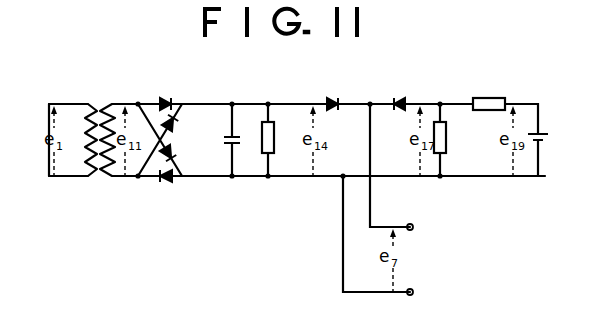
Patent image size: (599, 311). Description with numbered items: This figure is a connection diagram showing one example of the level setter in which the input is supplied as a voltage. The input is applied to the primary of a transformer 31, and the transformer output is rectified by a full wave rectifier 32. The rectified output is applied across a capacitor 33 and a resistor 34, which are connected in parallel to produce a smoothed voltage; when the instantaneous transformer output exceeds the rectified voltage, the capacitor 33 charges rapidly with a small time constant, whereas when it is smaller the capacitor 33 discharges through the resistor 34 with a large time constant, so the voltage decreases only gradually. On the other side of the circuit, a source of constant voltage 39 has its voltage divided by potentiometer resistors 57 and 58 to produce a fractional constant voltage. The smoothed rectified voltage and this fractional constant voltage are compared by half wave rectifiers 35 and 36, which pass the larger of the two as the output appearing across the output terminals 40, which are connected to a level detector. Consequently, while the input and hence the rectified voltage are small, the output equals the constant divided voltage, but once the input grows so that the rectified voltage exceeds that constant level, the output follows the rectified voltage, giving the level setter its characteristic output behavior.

The transformer 31 is at (99, 101).
The full wave rectifier 32 is at (166, 98).
The capacitor 33 is at (226, 140).
The resistor 34 is at (261, 139).
The half wave rectifier 35 is at (334, 99).
The half wave rectifier 36 is at (400, 99).
The potentiometer resistor 57 is at (447, 138).
The potentiometer resistor 58 is at (492, 97).
The source of constant voltage 39 is at (548, 136).
The output terminals 40 is at (415, 229).